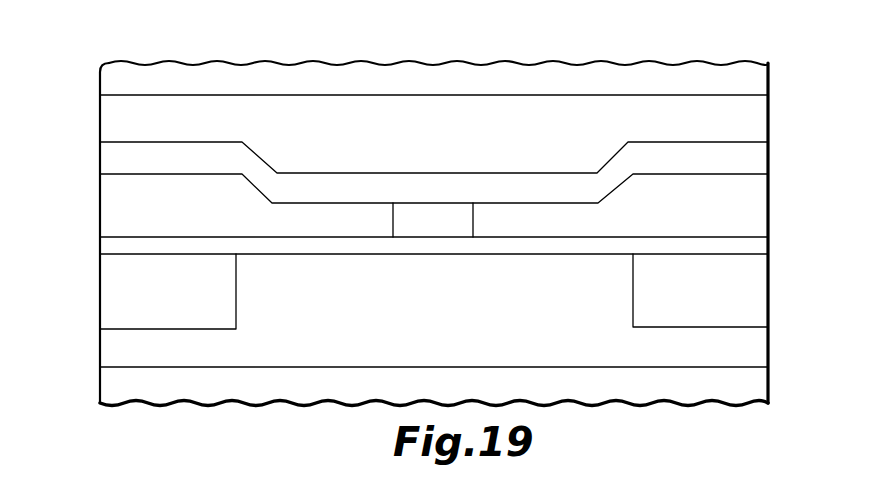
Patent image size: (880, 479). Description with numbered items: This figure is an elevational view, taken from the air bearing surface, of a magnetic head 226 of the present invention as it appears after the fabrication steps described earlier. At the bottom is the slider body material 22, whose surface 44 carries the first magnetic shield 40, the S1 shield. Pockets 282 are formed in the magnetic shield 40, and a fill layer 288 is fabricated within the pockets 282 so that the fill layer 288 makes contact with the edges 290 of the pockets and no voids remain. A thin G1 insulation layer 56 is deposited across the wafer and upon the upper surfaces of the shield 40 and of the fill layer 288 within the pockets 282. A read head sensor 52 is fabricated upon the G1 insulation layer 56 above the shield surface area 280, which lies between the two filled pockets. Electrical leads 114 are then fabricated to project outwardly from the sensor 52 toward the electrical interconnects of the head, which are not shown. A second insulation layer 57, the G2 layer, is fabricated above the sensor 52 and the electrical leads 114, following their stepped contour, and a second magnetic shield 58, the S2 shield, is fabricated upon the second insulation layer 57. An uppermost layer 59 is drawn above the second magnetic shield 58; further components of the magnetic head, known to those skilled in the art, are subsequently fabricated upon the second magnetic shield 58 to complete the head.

The magnetic head 226 is at (180, 56).
The upper layer 59 is at (752, 83).
The second magnetic shield 58 is at (752, 122).
The second insulation layer 57 is at (752, 158).
The electrical leads 114 is at (752, 207).
The read head sensor 52 is at (423, 193).
The G1 insulation layer 56 is at (755, 244).
The shield surface area 280 is at (427, 248).
The fill layer 288 is at (196, 308).
The edges of the pockets 290 is at (234, 254).
The pockets 282 is at (93, 298).
The first magnetic shield 40 is at (560, 326).
The surface 44 is at (432, 366).
The slider body material 22 is at (706, 388).